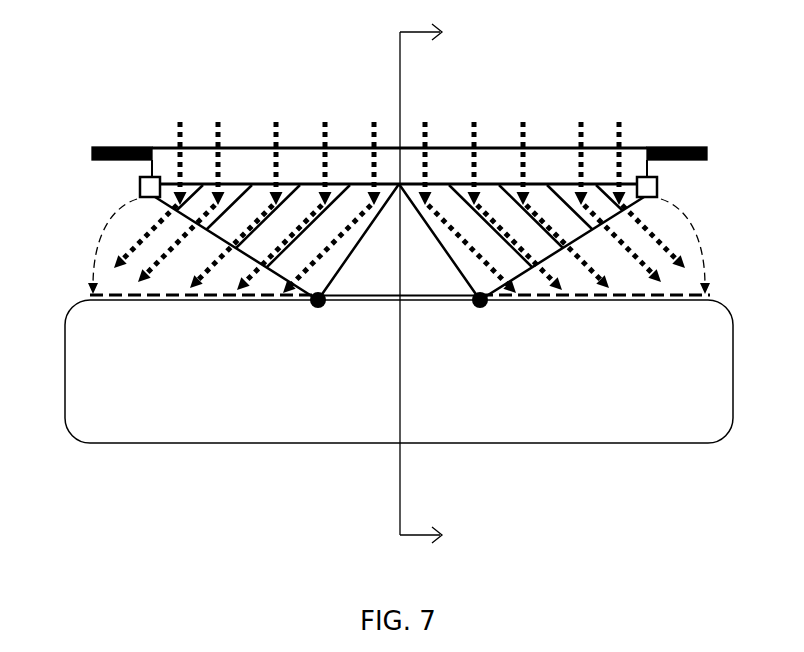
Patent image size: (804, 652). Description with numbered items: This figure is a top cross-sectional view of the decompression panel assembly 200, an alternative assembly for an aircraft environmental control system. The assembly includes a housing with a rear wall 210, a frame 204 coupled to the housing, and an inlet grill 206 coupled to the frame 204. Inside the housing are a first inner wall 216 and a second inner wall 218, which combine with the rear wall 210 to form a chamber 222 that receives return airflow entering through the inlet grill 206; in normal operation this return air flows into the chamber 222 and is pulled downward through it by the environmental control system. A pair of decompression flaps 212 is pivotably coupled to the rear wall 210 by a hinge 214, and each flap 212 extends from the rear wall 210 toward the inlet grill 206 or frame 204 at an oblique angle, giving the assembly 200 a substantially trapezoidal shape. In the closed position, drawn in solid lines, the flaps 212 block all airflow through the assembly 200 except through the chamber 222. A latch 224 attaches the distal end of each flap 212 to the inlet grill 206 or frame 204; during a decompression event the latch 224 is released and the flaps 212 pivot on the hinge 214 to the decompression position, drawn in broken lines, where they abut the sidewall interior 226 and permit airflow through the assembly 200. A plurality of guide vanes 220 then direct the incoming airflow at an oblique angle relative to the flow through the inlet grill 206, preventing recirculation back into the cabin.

The decompression panel assembly 200 is at (76, 57).
The frame 204 is at (697, 147).
The inlet grill 206 is at (156, 147).
The rear wall 210 is at (370, 298).
The decompression flaps 212 is at (157, 202).
The hinge 214 is at (312, 310).
The first inner wall 216 is at (345, 298).
The second inner wall 218 is at (457, 298).
The guide vanes 220 is at (337, 197).
The chamber 222 is at (415, 267).
The latch 224 is at (140, 187).
The sidewall interior 226 is at (673, 425).